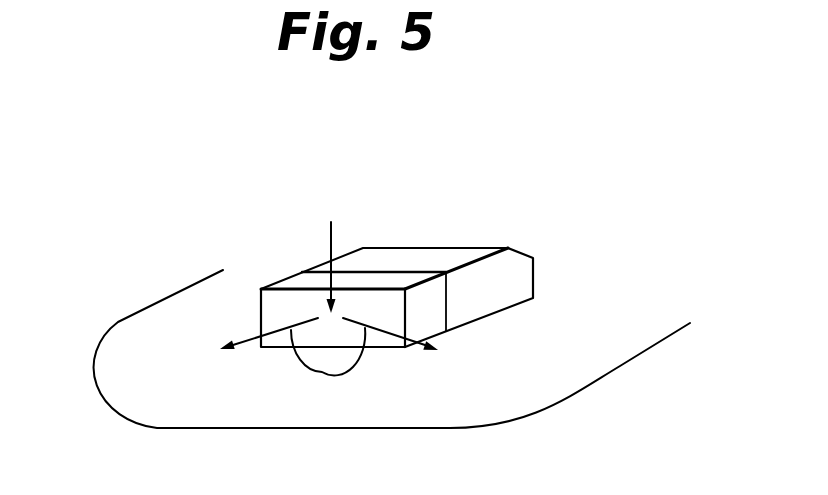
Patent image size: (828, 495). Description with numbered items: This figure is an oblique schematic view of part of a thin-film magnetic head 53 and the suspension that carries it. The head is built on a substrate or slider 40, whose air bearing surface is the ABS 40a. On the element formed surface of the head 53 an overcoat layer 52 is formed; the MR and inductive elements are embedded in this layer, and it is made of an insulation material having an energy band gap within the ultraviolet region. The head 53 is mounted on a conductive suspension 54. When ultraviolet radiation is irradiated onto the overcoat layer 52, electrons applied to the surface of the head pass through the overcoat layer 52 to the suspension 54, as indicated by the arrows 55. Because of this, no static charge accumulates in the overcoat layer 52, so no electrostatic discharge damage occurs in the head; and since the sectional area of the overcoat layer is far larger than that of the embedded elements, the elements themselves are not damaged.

The substrate 40 is at (520, 275).
The ABS 40a is at (440, 258).
The overcoat layer 52 is at (297, 280).
The thin-film magnetic head 53 is at (365, 200).
The conductive suspension 54 is at (575, 368).
The electron flow 55 is at (331, 245).